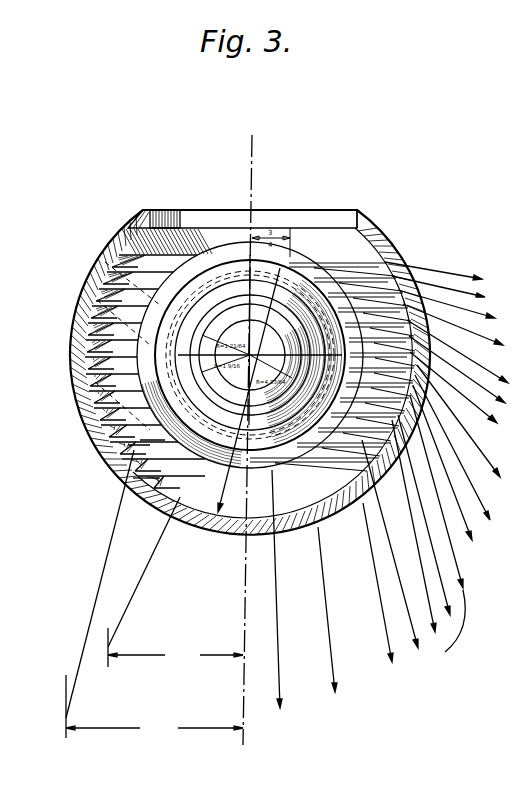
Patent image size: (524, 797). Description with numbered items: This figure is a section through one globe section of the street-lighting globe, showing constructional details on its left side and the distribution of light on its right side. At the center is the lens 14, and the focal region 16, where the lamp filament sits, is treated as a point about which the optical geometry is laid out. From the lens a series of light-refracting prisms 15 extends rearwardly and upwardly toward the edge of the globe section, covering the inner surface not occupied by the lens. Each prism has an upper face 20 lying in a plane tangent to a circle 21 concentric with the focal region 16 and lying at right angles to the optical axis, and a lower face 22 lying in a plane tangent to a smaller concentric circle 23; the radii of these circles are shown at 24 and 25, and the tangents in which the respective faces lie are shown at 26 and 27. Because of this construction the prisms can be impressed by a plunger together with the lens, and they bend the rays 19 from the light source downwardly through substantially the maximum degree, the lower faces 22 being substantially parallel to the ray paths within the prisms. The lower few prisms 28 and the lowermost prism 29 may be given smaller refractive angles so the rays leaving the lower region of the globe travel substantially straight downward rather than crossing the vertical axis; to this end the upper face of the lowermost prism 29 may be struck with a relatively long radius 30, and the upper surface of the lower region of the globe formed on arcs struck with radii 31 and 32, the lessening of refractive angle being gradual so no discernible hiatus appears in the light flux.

The lens 14 is at (262, 360).
The light-refracting prisms 15 is at (98, 283).
The focal region 16 is at (250, 355).
The rays 19 is at (336, 678).
The upper faces of the prisms 20 is at (171, 226).
The circle 21 is at (160, 351).
The lower faces of the prisms 22 is at (104, 340).
The circle 23 is at (242, 219).
The radius 24 is at (250, 355).
The radius 25 is at (250, 355).
The tangent 26 is at (205, 283).
The tangent 27 is at (105, 300).
The lower prisms 28 is at (140, 440).
The lowermost prism 29 is at (127, 477).
The radius 30 is at (93, 622).
The radius 31 is at (143, 583).
The radius 32 is at (242, 373).